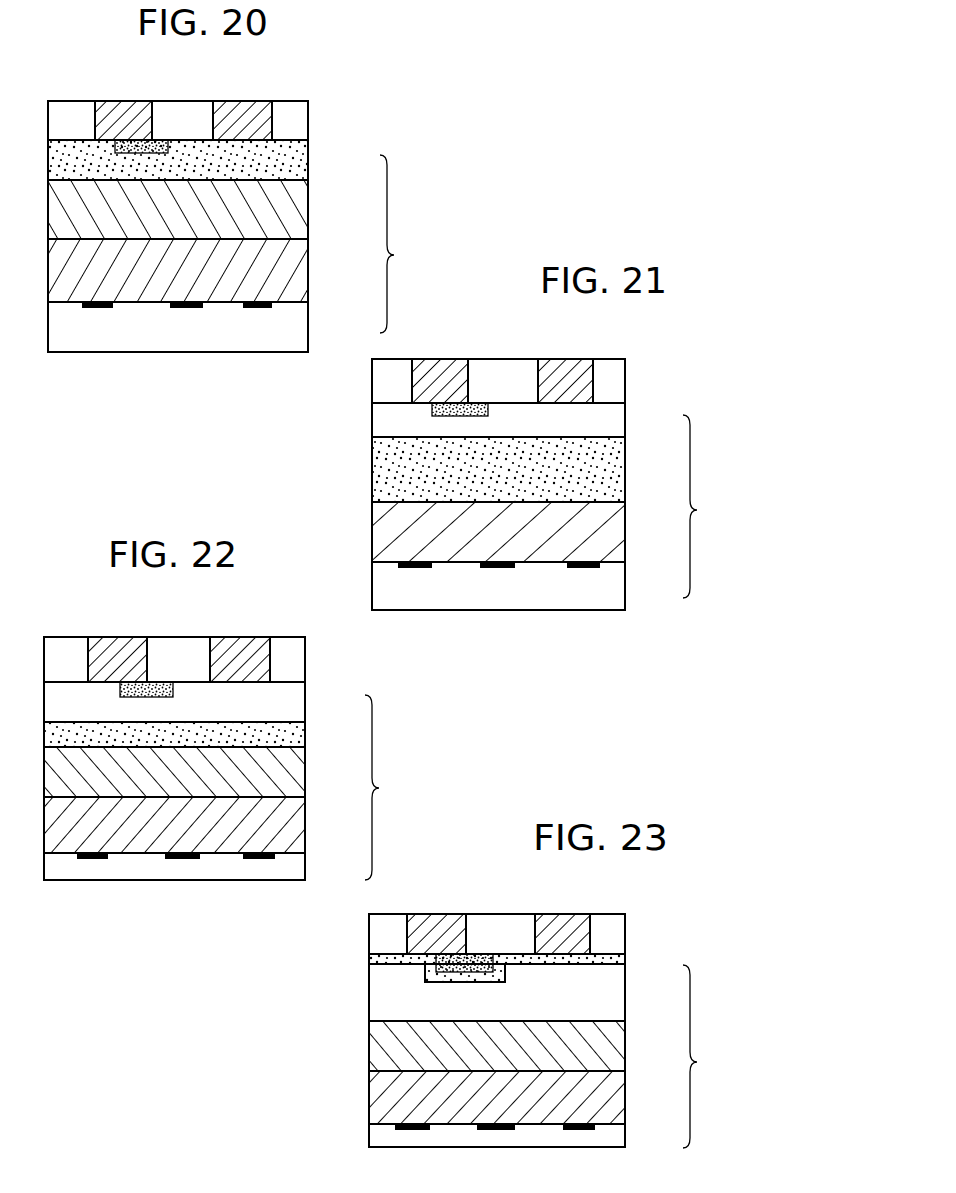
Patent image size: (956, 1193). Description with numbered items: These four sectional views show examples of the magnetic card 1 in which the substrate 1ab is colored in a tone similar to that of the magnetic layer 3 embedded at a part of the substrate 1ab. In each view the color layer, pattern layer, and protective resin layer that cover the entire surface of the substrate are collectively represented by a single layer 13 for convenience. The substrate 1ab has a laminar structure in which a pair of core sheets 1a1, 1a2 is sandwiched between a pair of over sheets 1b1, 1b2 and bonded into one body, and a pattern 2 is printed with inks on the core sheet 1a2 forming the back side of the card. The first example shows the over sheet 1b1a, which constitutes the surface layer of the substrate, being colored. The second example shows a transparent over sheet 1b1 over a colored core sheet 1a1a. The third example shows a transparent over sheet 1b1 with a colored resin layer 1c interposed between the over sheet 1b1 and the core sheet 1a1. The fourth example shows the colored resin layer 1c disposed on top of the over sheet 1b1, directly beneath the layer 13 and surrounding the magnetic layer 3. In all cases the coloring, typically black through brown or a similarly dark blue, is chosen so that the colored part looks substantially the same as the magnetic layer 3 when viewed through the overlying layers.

In FIG. 20, the magnetic card 1 is at (75, 96).
In FIG. 21, the magnetic card 1 is at (358, 423).
In FIG. 22, the magnetic card 1 is at (73, 628).
In FIG. 23, the magnetic card 1 is at (368, 967).
In FIG. 20, the layer 13 is at (308, 123).
In FIG. 21, the layer 13 is at (625, 385).
In FIG. 22, the layer 13 is at (305, 655).
In FIG. 23, the layer 13 is at (625, 934).
In FIG. 20, the magnetic layer 3 is at (160, 138).
In FIG. 21, the magnetic layer 3 is at (482, 401).
In FIG. 22, the magnetic layer 3 is at (157, 681).
In FIG. 23, the magnetic layer 3 is at (476, 952).
In FIG. 20, the pattern 2 is at (257, 308).
In FIG. 21, the pattern 2 is at (497, 568).
In FIG. 22, the pattern 2 is at (258, 859).
In FIG. 23, the pattern 2 is at (402, 1130).
In FIG. 20, the substrate 1ab is at (411, 244).
In FIG. 21, the substrate 1ab is at (715, 506).
In FIG. 22, the substrate 1ab is at (397, 787).
In FIG. 23, the substrate 1ab is at (713, 1056).
In FIG. 20, the core sheet 1a1 is at (308, 217).
In FIG. 22, the core sheet 1a1 is at (305, 778).
In FIG. 23, the core sheet 1a1 is at (625, 1046).
In FIG. 20, the core sheet 1a2 is at (308, 275).
In FIG. 21, the core sheet 1a2 is at (625, 535).
In FIG. 22, the core sheet 1a2 is at (305, 830).
In FIG. 23, the core sheet 1a2 is at (625, 1101).
In FIG. 21, the colored core sheet 1a1a is at (625, 475).
In FIG. 21, the over sheet 1b1 is at (625, 423).
In FIG. 22, the over sheet 1b1 is at (305, 708).
In FIG. 23, the over sheet 1b1 is at (625, 1005).
In FIG. 20, the colored over sheet 1b1a is at (308, 165).
In FIG. 20, the over sheet 1b2 is at (308, 320).
In FIG. 21, the over sheet 1b2 is at (625, 588).
In FIG. 22, the over sheet 1b2 is at (305, 868).
In FIG. 23, the over sheet 1b2 is at (625, 1136).
In FIG. 22, the colored resin layer 1c is at (305, 735).
In FIG. 23, the colored resin layer 1c is at (622, 960).